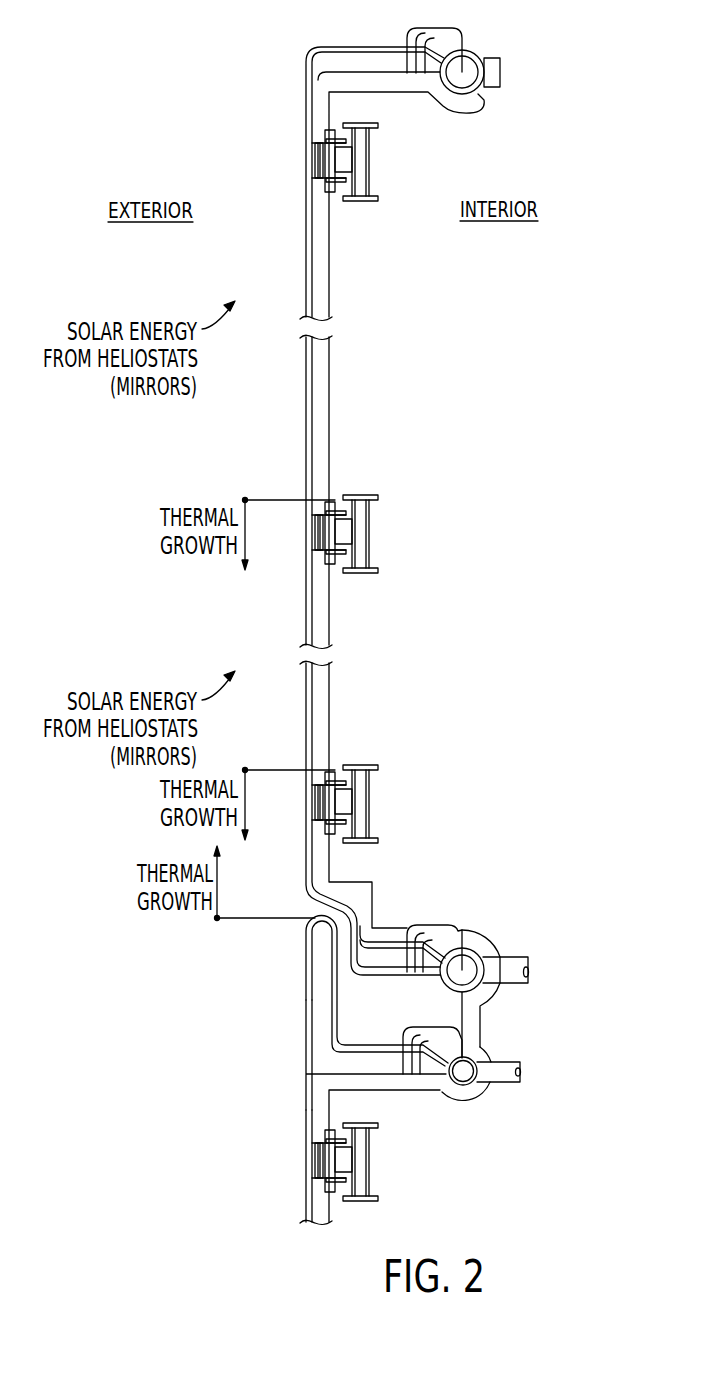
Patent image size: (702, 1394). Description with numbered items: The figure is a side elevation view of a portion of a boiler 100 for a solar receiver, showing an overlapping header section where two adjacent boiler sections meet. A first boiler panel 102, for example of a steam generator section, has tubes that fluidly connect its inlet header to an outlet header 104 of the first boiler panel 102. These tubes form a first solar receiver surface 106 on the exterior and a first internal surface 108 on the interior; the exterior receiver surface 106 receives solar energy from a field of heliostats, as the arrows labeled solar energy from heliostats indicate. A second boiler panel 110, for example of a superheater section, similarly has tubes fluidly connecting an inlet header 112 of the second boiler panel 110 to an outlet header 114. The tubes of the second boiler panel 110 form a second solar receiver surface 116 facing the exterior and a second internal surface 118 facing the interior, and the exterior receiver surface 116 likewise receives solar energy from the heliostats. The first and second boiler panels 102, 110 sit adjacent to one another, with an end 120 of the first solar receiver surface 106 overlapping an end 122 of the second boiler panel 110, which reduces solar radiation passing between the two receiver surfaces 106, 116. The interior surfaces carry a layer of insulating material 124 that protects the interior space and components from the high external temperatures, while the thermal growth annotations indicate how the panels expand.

The boiler 100 is at (211, 82).
The first boiler panel 102 is at (305, 1198).
The outlet header 104 is at (468, 1086).
The first solar receiver surface 106 is at (305, 1037).
The first internal surface 108 is at (312, 1123).
The second boiler panel 110 is at (305, 410).
The inlet header 112 is at (470, 950).
The outlet header 114 is at (470, 78).
The second solar receiver surface 116 is at (305, 238).
The second internal surface 118 is at (312, 249).
The end of first solar receiver surface 120 is at (305, 962).
The end of second boiler panel 122 is at (353, 921).
The insulating material 124 is at (330, 432).